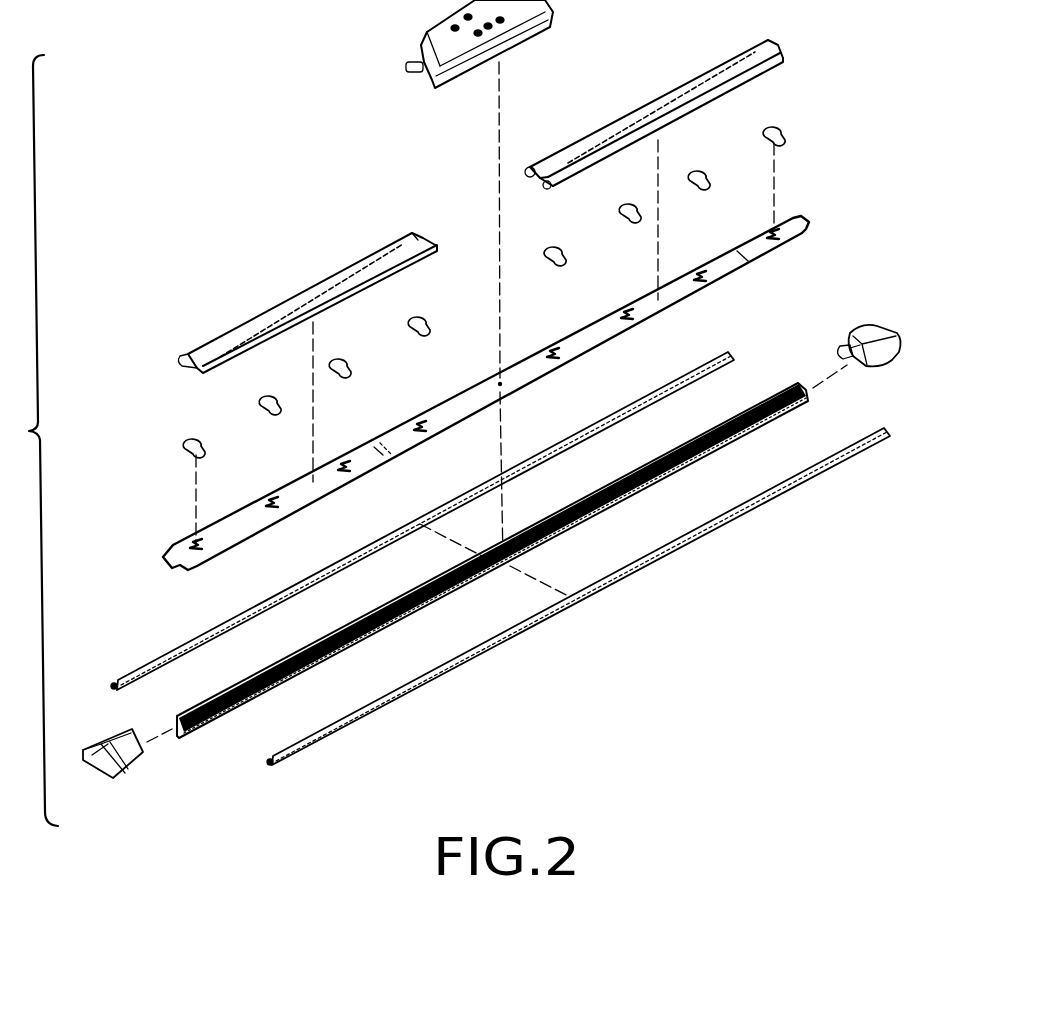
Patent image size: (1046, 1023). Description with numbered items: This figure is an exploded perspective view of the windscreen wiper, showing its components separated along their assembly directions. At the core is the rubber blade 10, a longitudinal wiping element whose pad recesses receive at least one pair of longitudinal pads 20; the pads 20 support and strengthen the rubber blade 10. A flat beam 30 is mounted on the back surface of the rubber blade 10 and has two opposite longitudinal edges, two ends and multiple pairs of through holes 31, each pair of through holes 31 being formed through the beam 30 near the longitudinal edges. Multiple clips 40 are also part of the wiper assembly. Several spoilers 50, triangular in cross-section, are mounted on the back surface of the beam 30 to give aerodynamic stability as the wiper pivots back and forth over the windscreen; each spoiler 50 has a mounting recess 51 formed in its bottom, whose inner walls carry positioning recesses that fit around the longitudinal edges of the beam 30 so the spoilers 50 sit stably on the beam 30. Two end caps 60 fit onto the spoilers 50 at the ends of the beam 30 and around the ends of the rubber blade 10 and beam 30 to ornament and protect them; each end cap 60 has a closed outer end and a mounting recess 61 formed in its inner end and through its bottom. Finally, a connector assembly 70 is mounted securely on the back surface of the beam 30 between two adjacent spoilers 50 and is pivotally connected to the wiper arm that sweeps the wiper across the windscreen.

The rubber blade 10 is at (407, 600).
The pads 20 is at (352, 562).
The beam 30 is at (486, 393).
The through holes 31 is at (270, 502).
The clips 40 is at (428, 322).
The spoilers 50 is at (285, 317).
The mounting recess 51 is at (198, 370).
The end caps 60 is at (834, 339).
The mounting recess 61 is at (843, 358).
The connector assembly 70 is at (518, 38).